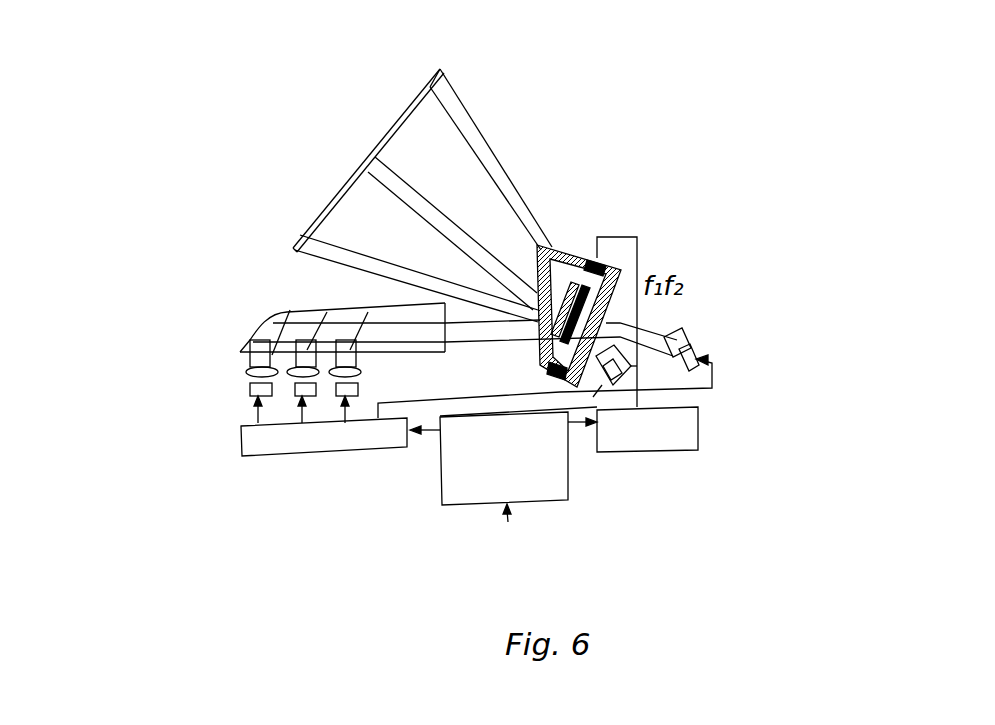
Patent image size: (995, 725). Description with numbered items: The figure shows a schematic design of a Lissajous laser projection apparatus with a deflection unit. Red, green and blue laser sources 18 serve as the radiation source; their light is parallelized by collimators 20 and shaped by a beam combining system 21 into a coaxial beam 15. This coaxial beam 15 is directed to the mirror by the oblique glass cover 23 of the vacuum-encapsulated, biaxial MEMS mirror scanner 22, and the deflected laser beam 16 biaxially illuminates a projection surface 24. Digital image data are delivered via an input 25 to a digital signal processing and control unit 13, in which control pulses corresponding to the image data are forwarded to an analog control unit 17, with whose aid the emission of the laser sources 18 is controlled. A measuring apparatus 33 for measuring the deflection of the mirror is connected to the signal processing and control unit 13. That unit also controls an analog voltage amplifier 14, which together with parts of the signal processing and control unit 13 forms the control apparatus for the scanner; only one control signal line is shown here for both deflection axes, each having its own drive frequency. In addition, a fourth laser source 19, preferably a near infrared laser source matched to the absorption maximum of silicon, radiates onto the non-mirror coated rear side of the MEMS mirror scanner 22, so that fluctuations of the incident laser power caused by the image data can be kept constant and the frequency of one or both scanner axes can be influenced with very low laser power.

The digital signal processing and control unit 13 is at (533, 468).
The analog voltage amplifier 14 is at (677, 430).
The coaxial beam 15 is at (540, 332).
The deflected laser beam 16 is at (443, 213).
The analog control unit 17 is at (273, 440).
The laser sources 18 is at (297, 395).
The fourth laser source 19 is at (703, 358).
The collimators 20 is at (677, 338).
The beam combining system 21 is at (228, 352).
The MEMS mirror scanner 22 is at (572, 282).
The oblique glass cover 23 is at (552, 246).
The projection surface 24 is at (312, 227).
The input 25 is at (508, 522).
The measuring apparatus 33 is at (632, 371).